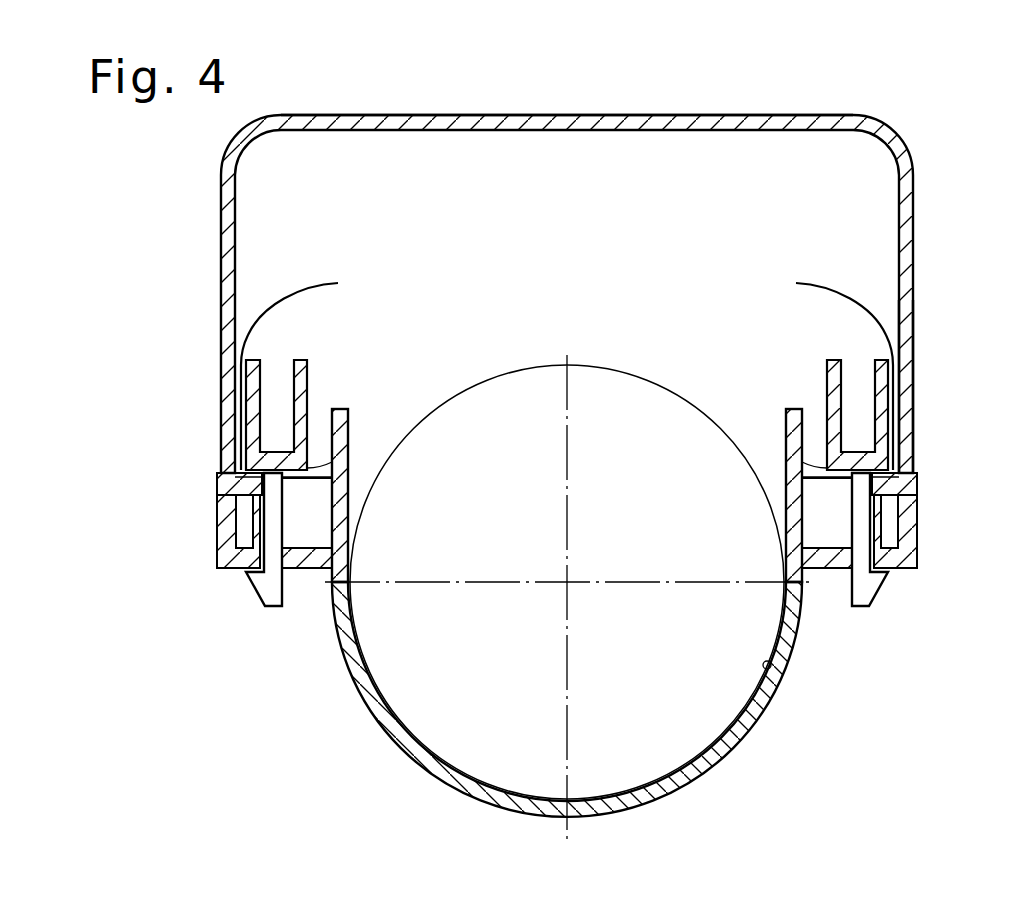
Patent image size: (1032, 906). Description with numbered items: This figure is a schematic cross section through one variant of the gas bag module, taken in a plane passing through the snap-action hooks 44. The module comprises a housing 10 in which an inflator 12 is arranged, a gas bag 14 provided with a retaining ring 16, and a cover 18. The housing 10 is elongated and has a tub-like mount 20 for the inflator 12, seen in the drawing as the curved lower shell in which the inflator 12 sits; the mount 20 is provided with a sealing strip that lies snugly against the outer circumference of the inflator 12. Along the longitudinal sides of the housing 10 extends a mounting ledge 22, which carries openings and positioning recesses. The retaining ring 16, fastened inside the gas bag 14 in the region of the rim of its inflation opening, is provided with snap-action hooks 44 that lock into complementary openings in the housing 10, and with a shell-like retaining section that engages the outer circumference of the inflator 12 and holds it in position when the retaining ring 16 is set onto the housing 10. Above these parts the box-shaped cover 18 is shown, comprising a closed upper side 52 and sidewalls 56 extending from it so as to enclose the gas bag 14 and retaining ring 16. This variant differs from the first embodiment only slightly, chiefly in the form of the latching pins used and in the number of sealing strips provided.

The housing 10 is at (704, 790).
The inflator 12 is at (697, 683).
The gas bag 14 is at (850, 297).
The retaining ring 16 is at (308, 377).
The cover 18 is at (214, 250).
The mount 20 is at (770, 668).
The mounting ledge 22 is at (907, 542).
The snap-action hooks 44 is at (272, 592).
The closed upper side 52 is at (740, 116).
The sidewall 56 is at (905, 410).